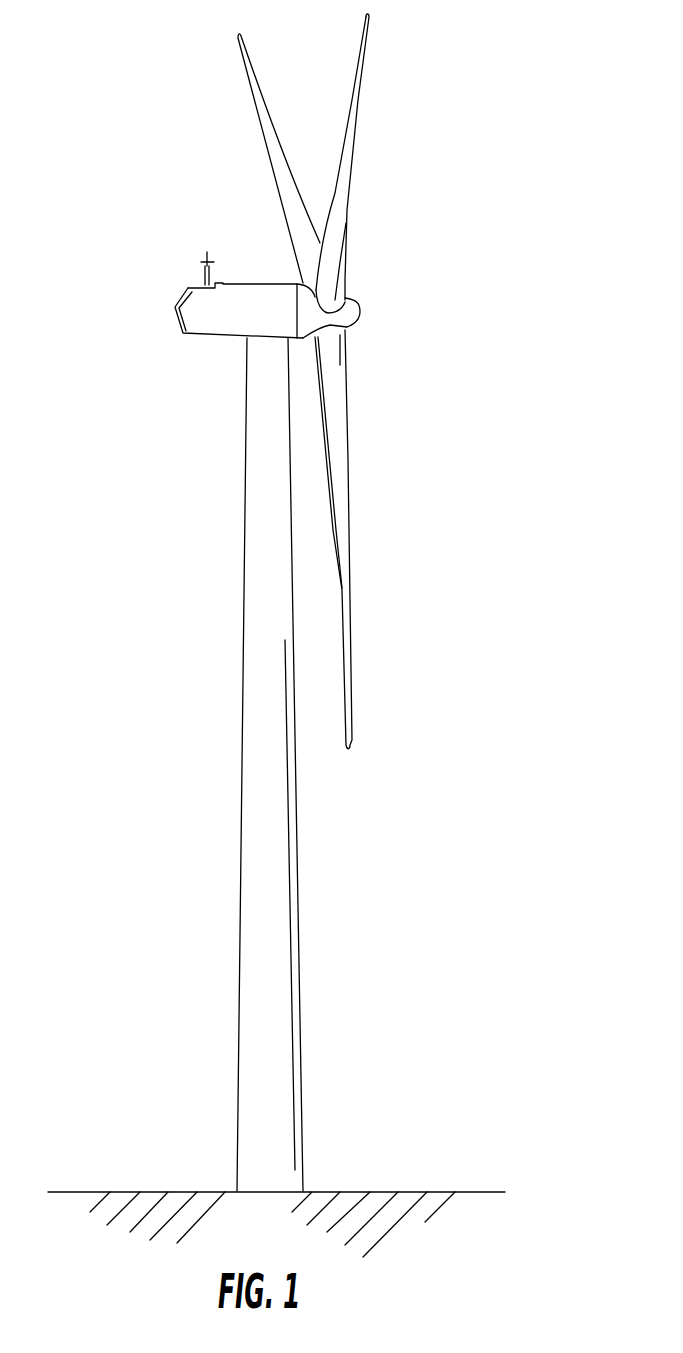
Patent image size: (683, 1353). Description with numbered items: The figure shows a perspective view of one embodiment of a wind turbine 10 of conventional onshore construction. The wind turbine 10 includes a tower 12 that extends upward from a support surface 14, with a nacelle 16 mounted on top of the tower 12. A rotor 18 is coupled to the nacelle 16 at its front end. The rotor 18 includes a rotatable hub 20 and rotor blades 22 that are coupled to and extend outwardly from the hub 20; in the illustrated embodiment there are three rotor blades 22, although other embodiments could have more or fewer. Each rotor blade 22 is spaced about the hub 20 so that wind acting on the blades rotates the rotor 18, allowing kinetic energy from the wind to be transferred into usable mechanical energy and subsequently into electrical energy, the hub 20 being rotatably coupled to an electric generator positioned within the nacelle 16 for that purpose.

The wind turbine 10 is at (486, 146).
The tower 12 is at (247, 938).
The support surface 14 is at (222, 1190).
The nacelle 16 is at (217, 322).
The rotor 18 is at (372, 329).
The rotatable hub 20 is at (357, 312).
The rotor blade 22 is at (265, 107).